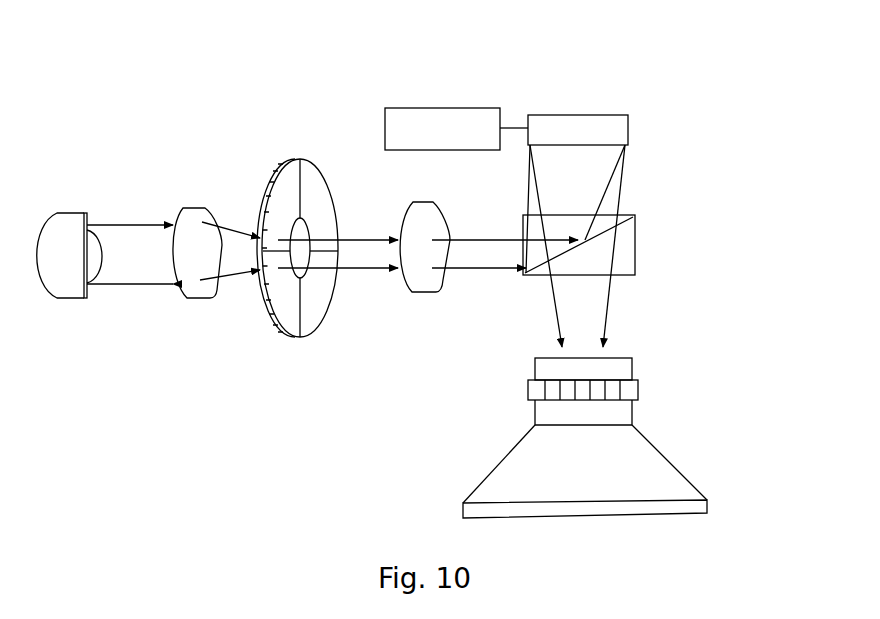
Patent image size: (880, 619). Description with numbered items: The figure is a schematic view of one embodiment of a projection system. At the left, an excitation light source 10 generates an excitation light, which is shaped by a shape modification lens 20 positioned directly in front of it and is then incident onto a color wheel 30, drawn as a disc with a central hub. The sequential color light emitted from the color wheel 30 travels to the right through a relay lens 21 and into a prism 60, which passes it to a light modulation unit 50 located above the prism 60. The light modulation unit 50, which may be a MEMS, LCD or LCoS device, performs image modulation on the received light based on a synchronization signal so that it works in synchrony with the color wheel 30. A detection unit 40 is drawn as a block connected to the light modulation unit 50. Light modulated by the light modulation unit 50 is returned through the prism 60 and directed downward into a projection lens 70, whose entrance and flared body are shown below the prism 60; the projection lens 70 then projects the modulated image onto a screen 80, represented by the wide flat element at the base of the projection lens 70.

The excitation light source 10 is at (73, 213).
The shape modification lens 20 is at (197, 208).
The relay lens 21 is at (425, 293).
The color wheel 30 is at (293, 337).
The detection unit 40 is at (450, 108).
The light modulation unit 50 is at (628, 128).
The prism 60 is at (635, 245).
The projection lens 70 is at (632, 362).
The screen 80 is at (707, 507).